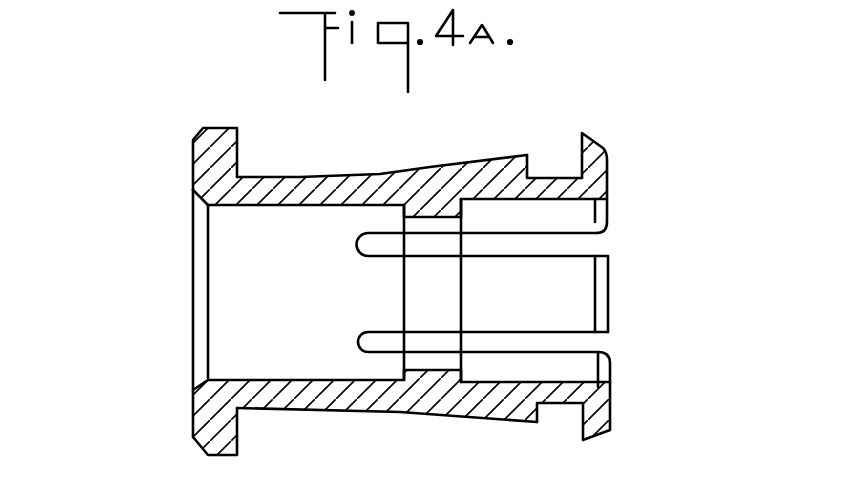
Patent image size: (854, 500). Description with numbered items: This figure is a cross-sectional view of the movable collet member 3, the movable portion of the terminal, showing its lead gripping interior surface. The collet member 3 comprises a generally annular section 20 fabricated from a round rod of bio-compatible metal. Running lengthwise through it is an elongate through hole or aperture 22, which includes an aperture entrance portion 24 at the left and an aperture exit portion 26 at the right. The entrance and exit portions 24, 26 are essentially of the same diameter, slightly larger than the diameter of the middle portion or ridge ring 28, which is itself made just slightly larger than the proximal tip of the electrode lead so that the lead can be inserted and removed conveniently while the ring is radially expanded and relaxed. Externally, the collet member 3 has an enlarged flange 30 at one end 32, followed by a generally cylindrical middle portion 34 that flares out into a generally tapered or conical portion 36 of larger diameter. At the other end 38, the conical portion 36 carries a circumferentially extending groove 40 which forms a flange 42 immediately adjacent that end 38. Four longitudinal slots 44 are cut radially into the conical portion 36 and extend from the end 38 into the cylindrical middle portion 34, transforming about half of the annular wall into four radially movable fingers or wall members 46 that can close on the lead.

The movable collet member 3 is at (374, 157).
The generally annular section 20 is at (293, 176).
The aperture 22 is at (183, 270).
The aperture entrance portion 24 is at (232, 374).
The aperture exit portion 26 is at (575, 385).
The ridge ring 28 is at (420, 293).
The enlarged flange 30 is at (212, 126).
The one end 32 is at (193, 432).
The generally cylindrical middle portion 34 is at (272, 410).
The generally tapered or conical portion 36 is at (462, 162).
The other end 38 is at (607, 290).
The circumferentially extending groove 40 is at (555, 176).
The flange 42 is at (603, 148).
The longitudinal slots 44 is at (580, 233).
The radially movable fingers or wall members 46 is at (507, 155).